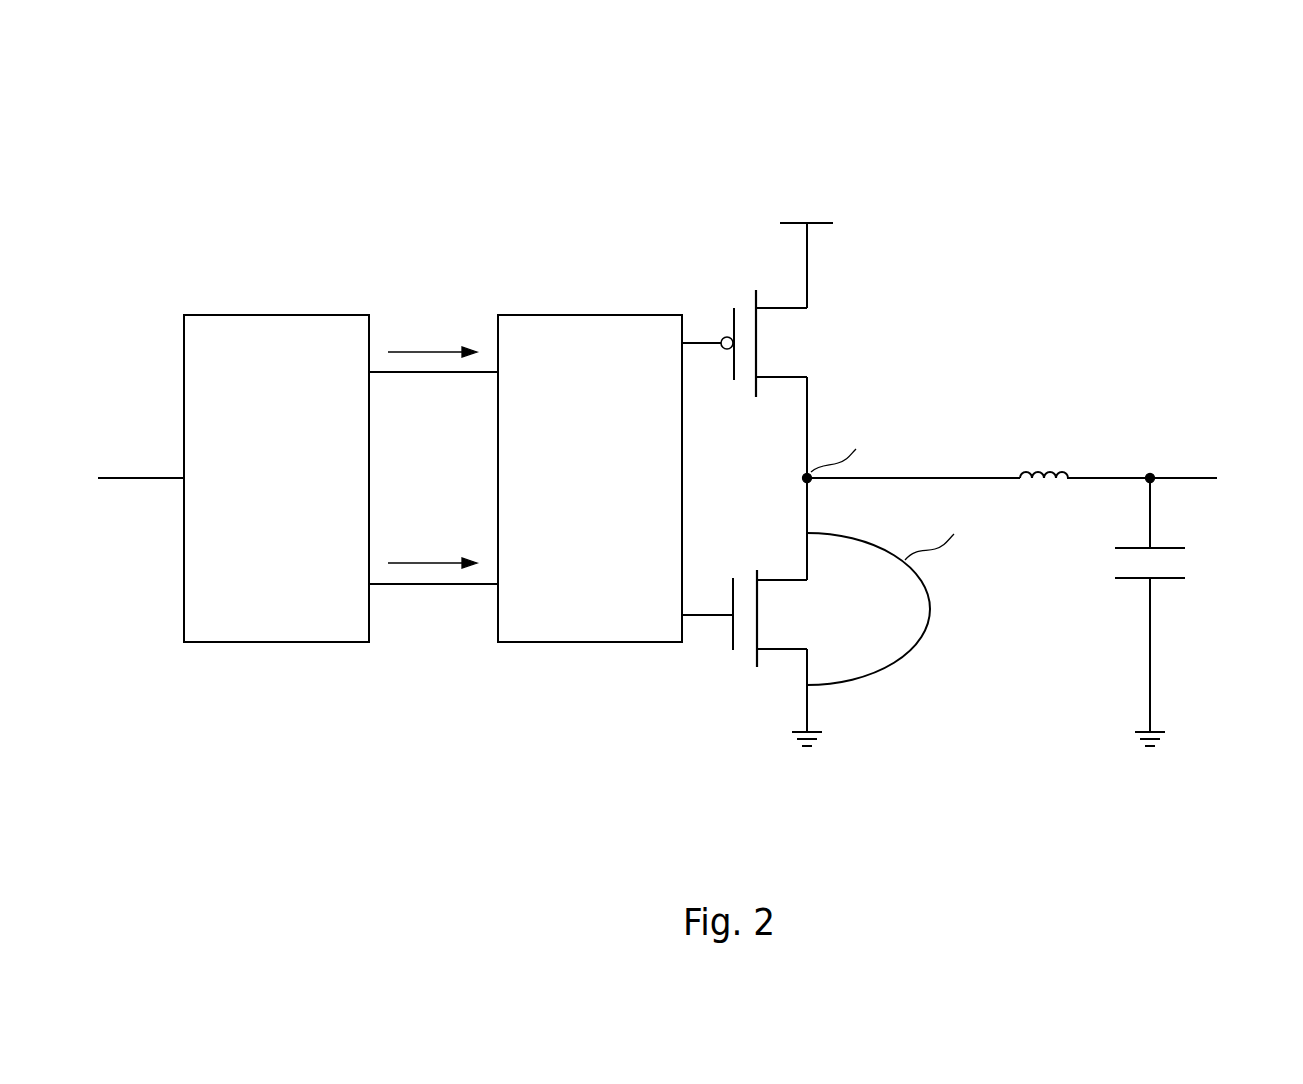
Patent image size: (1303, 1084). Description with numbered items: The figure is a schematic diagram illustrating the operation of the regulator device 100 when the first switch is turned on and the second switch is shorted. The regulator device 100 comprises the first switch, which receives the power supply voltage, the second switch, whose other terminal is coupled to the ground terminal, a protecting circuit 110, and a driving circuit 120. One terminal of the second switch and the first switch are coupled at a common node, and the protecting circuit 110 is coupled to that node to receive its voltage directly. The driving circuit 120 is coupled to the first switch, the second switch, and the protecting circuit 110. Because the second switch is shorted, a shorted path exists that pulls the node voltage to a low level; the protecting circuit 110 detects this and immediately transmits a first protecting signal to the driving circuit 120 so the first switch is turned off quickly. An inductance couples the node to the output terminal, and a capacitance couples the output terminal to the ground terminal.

The regulator device 100 is at (166, 80).
The protecting circuit 110 is at (273, 315).
The driving circuit 120 is at (593, 315).